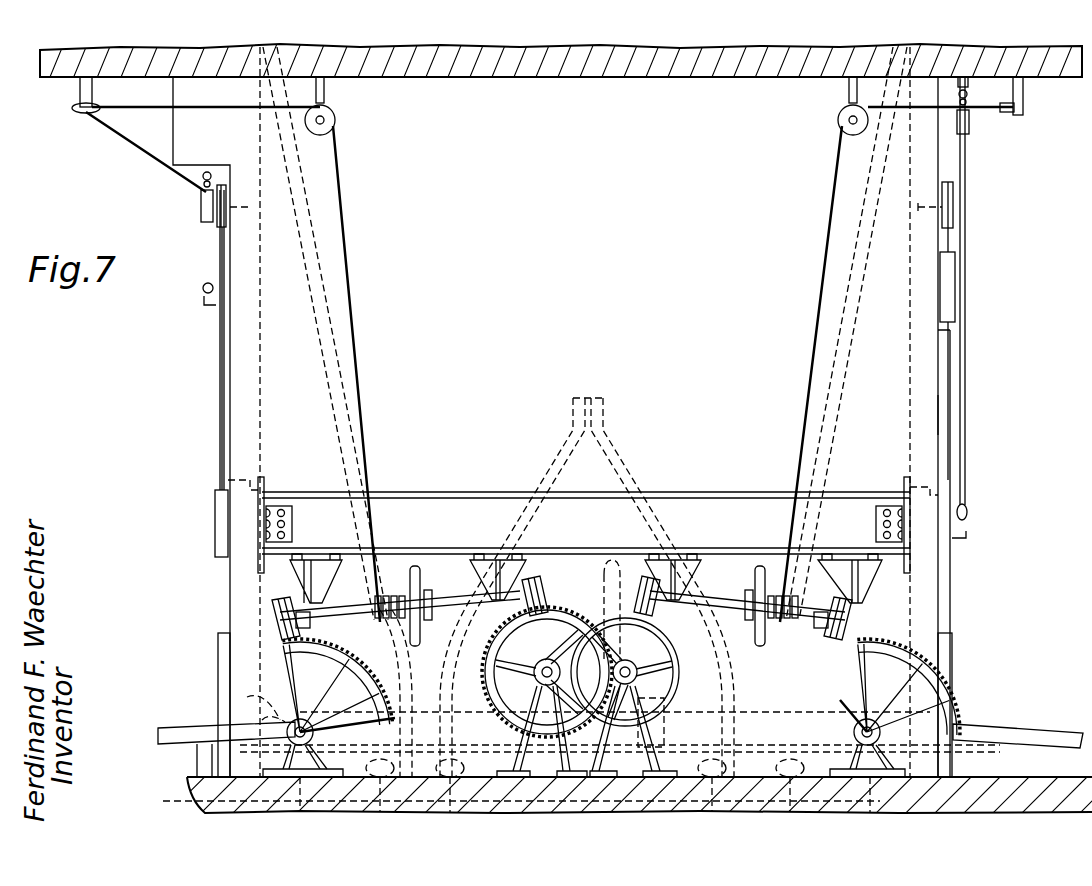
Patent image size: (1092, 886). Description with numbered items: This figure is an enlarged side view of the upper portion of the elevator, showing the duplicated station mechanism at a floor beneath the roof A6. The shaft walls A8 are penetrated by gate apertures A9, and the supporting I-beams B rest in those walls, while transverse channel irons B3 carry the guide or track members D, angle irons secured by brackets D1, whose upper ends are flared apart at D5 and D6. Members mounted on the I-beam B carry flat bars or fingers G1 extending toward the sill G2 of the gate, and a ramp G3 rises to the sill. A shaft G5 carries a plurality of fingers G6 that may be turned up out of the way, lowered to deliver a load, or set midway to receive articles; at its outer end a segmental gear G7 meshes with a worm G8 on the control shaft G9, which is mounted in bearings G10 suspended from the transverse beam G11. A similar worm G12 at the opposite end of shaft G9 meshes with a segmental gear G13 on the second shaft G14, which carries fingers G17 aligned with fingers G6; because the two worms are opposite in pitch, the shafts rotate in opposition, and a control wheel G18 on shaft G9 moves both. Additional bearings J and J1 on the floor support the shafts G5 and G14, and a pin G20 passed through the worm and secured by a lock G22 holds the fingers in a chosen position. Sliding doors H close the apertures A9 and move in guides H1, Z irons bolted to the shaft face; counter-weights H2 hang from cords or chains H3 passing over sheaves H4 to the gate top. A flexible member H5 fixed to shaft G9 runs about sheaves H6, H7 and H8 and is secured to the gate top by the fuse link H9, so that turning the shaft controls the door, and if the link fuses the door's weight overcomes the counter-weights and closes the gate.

The roof A6 is at (560, 78).
The walls of the elevator shaft A8 is at (945, 416).
The gate apertures A9 is at (228, 480).
The I-beams B is at (190, 797).
The transverse channel irons B3 is at (700, 730).
The guide or track members D is at (515, 730).
The brackets D1 is at (485, 815).
The flared upper end of track D5 is at (333, 390).
The flared upper end of track D6 is at (560, 442).
The flat bars or fingers G1 is at (275, 720).
The sill G2 is at (262, 720).
The ramp G3 is at (170, 731).
The shaft G5 is at (288, 735).
The fingers G6 is at (372, 722).
The segmental gear G7 is at (282, 645).
The worm G8 is at (275, 617).
The shaft G9 is at (447, 600).
The bearings G10 is at (310, 618).
The transverse beam G11 is at (695, 505).
The worm G12 is at (600, 600).
The segmental gear G13 is at (620, 715).
The shaft G14 is at (580, 660).
The fingers G17 is at (610, 580).
The control wheel G18 is at (413, 568).
The pin G20 is at (505, 592).
The lock G22 is at (470, 600).
The sliding doors H is at (218, 404).
The guides H1 is at (216, 680).
The counter-weights H2 is at (215, 517).
The cords or chains H3 is at (222, 445).
The sheaves H4 is at (221, 228).
The flexible member H5 is at (356, 258).
The sheave H6 is at (336, 122).
The sheave H7 is at (76, 106).
The sheave H8 is at (201, 206).
The fuse link H9 is at (204, 288).
The bearing J is at (265, 764).
The bearing J1 is at (640, 700).